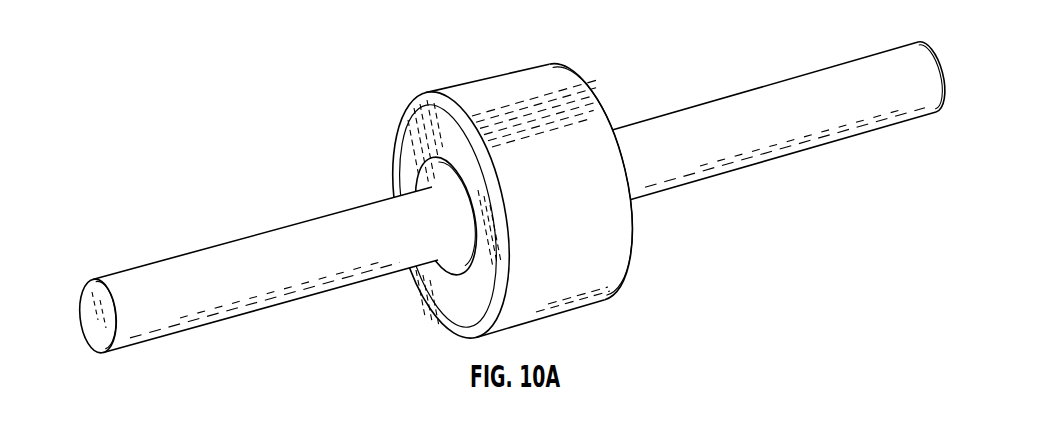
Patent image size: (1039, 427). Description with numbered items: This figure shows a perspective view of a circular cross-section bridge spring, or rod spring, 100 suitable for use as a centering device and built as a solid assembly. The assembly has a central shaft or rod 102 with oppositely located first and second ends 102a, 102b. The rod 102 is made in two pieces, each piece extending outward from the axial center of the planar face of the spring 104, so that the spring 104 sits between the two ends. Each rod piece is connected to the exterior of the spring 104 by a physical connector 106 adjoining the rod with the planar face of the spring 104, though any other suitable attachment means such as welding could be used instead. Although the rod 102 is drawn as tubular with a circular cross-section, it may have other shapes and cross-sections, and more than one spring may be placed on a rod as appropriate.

The bridge spring 100 is at (518, 198).
The rod 102 is at (782, 132).
The first end 102a is at (93, 320).
The second end 102b is at (944, 90).
The spring 104 is at (598, 210).
The physical connector 106 is at (427, 168).